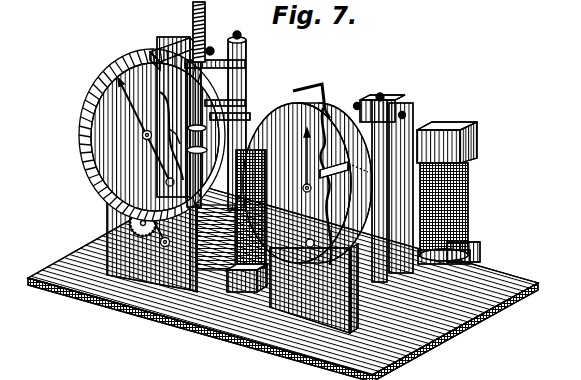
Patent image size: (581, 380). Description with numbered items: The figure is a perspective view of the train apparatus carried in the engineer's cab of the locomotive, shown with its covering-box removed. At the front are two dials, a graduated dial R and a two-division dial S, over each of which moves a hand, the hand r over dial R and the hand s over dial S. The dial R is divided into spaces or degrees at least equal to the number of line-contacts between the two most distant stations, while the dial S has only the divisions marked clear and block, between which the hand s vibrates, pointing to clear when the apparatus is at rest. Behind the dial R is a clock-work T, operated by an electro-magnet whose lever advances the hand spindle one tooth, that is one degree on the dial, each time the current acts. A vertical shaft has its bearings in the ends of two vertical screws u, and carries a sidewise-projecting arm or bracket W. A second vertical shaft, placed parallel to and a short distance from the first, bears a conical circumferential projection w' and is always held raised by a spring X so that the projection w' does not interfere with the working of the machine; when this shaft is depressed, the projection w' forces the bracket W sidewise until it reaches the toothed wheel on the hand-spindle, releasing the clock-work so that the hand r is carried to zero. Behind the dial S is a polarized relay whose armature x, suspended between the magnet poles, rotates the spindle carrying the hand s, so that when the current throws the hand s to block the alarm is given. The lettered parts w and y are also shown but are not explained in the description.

The clock-work T is at (215, 282).
The spring X is at (206, 32).
The vertical screw u is at (212, 46).
The hand r is at (146, 132).
The dial R is at (152, 135).
The arm or bracket W is at (171, 136).
The lever arm w is at (174, 136).
The conical circumferential projection w' is at (309, 89).
The arm y is at (332, 102).
The armature x is at (409, 140).
The dial S is at (307, 183).
The hand s is at (302, 160).